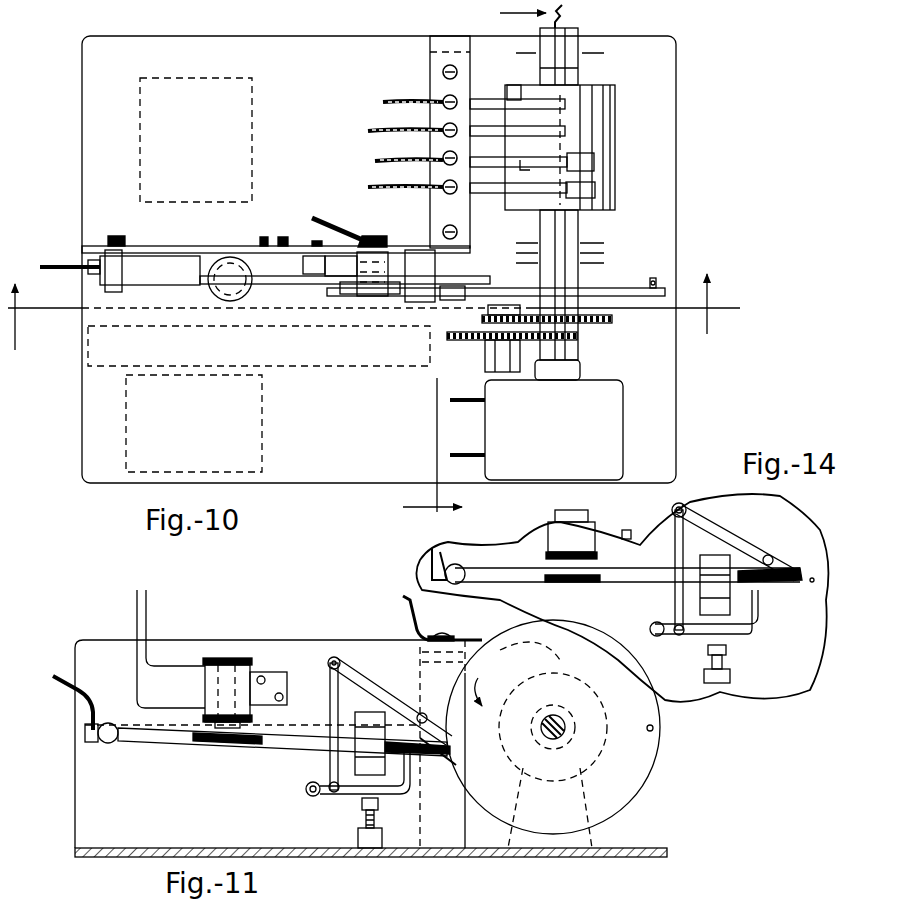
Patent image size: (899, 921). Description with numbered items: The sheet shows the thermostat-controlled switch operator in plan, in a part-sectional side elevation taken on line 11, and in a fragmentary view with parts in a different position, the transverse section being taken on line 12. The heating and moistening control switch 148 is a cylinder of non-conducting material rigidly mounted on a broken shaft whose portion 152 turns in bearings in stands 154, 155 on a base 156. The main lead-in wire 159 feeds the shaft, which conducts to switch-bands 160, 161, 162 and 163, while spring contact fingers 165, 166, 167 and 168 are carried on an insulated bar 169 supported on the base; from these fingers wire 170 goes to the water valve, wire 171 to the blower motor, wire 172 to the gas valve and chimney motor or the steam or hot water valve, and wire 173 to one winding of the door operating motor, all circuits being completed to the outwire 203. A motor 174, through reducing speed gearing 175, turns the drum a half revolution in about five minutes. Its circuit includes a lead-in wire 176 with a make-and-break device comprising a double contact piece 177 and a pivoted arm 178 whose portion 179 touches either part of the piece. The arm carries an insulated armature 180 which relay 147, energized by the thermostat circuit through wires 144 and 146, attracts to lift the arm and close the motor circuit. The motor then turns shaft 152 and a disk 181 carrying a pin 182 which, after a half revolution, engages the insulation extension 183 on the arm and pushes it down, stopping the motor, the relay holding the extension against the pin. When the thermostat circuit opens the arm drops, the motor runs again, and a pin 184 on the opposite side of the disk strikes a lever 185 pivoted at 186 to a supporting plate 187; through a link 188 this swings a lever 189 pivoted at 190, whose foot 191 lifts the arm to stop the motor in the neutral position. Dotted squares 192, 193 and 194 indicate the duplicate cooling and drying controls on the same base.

In FIG. 10, the section line 11— 11 is at (374, 322).
In FIG. 10, the section line 12— 12 is at (460, 260).
In FIG. 11, the wire 144 is at (147, 605).
In FIG. 11, the wire 146 is at (136, 610).
In FIG. 10, the relay 147 is at (220, 262).
In FIG. 11, the relay 147 is at (224, 658).
In FIG. 14, the relay 147 is at (546, 545).
In FIG. 10, the heating and moistening control switch 148 is at (615, 133).
In FIG. 11, the shaft portion 152 is at (566, 722).
In FIG. 10, the stand 154 is at (580, 34).
In FIG. 10, the stand 155 is at (580, 236).
In FIG. 11, the stand 155 is at (585, 842).
In FIG. 10, the base 156 is at (650, 388).
In FIG. 11, the base 156 is at (485, 857).
In FIG. 10, the main lead-in wire 159 is at (566, 12).
In FIG. 10, the switch-band 160 is at (514, 85).
In FIG. 10, the switch-band 161 is at (540, 156).
In FIG. 10, the switch-band 162 is at (594, 165).
In FIG. 10, the switch-band 163 is at (595, 192).
In FIG. 10, the spring contact finger 165 is at (505, 99).
In FIG. 10, the spring contact finger 166 is at (490, 123).
In FIG. 10, the spring contact finger 167 is at (490, 151).
In FIG. 10, the spring contact finger 168 is at (490, 181).
In FIG. 11, the spring contact finger 168 is at (470, 642).
In FIG. 10, the insulated bar 169 is at (428, 90).
In FIG. 11, the insulated bar 169 is at (420, 648).
In FIG. 10, the wire 170 is at (380, 105).
In FIG. 10, the wire 171 is at (366, 130).
In FIG. 10, the wire 172 is at (373, 160).
In FIG. 10, the wire 173 is at (368, 186).
In FIG. 11, the wire 173 is at (418, 604).
In FIG. 10, the motor 174 is at (605, 430).
In FIG. 10, the reducing speed gearing 175 is at (580, 333).
In FIG. 10, the lead-in wire 176 is at (60, 266).
In FIG. 11, the lead-in wire 176 is at (62, 686).
In FIG. 14, the lead-in wire 176 is at (430, 554).
In FIG. 10, the double contact piece 177 is at (390, 252).
In FIG. 11, the double contact piece 177 is at (370, 712).
In FIG. 14, the double contact piece 177 is at (715, 558).
In FIG. 10, the pivoted arm 178 is at (290, 286).
In FIG. 11, the pivoted arm 178 is at (274, 746).
In FIG. 14, the pivoted arm 178 is at (658, 583).
In FIG. 11, the contacting portion 179 is at (365, 748).
In FIG. 14, the contacting portion 179 is at (710, 576).
In FIG. 10, the armature 180 is at (200, 285).
In FIG. 11, the armature 180 is at (226, 744).
In FIG. 14, the armature 180 is at (605, 568).
In FIG. 10, the disk 181 is at (598, 288).
In FIG. 11, the disk 181 is at (630, 678).
In FIG. 14, the disk 181 is at (810, 640).
In FIG. 10, the pin 182 is at (660, 278).
In FIG. 11, the pin 182 is at (655, 728).
In FIG. 14, the pin 182 is at (814, 575).
In FIG. 10, the insulation extension 183 is at (436, 280).
In FIG. 11, the insulation extension 183 is at (440, 760).
In FIG. 14, the insulation extension 183 is at (780, 588).
In FIG. 10, the pin 184 is at (452, 300).
In FIG. 11, the pin 184 is at (458, 736).
In FIG. 10, the lever 185 is at (372, 297).
In FIG. 11, the lever 185 is at (337, 658).
In FIG. 14, the lever 185 is at (705, 520).
In FIG. 10, the pivot 186 is at (410, 300).
In FIG. 11, the pivot 186 is at (425, 713).
In FIG. 14, the pivot 186 is at (770, 556).
In FIG. 10, the supporting plate 187 is at (152, 246).
In FIG. 11, the link 188 is at (330, 714).
In FIG. 11, the lever 189 is at (340, 796).
In FIG. 10, the pivot 190 is at (310, 256).
In FIG. 11, the pivot 190 is at (306, 791).
In FIG. 14, the pivot 190 is at (655, 624).
In FIG. 11, the foot 191 is at (410, 790).
In FIG. 14, the foot 191 is at (735, 676).
In FIG. 10, the dotted square 192 is at (232, 128).
In FIG. 10, the dotted square 193 is at (259, 346).
In FIG. 10, the dotted square 194 is at (194, 423).
In FIG. 10, the outwire 203 is at (458, 459).